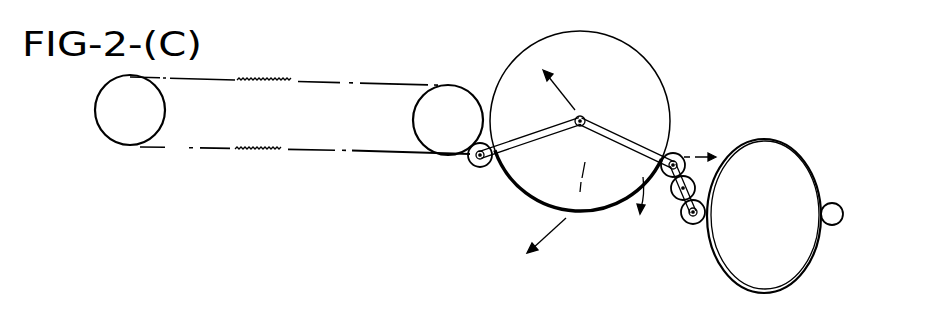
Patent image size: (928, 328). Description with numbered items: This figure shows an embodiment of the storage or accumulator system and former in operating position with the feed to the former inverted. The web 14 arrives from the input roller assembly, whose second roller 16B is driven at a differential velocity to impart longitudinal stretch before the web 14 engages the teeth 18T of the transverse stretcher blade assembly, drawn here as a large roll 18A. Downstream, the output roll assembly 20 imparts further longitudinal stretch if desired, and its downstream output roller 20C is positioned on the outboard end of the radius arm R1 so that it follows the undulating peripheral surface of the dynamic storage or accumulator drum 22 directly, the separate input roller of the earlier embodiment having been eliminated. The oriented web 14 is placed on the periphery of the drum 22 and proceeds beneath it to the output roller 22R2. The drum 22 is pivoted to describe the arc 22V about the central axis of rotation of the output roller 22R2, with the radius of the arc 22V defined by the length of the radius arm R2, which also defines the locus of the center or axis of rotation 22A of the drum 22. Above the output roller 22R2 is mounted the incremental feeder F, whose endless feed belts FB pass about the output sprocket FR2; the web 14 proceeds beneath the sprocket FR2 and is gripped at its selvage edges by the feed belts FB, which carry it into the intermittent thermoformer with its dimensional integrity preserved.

The output roller or sprocket FR2 is at (149, 120).
The incremental feeder F is at (358, 66).
The feed belts FB is at (267, 155).
The web 14 is at (397, 155).
The dynamic storage or accumulator drum 22 is at (591, 65).
The center or axis of rotation 22A is at (582, 116).
The radius arm R1 is at (605, 132).
The radius arm R2 is at (528, 149).
The output roller 22R2 is at (486, 172).
The arc 22V is at (552, 236).
The downstream output roller 20C is at (676, 152).
The output roll assembly 20 is at (726, 151).
The roll 18A is at (800, 199).
The teeth 18T is at (813, 176).
The second roller 16B is at (835, 224).